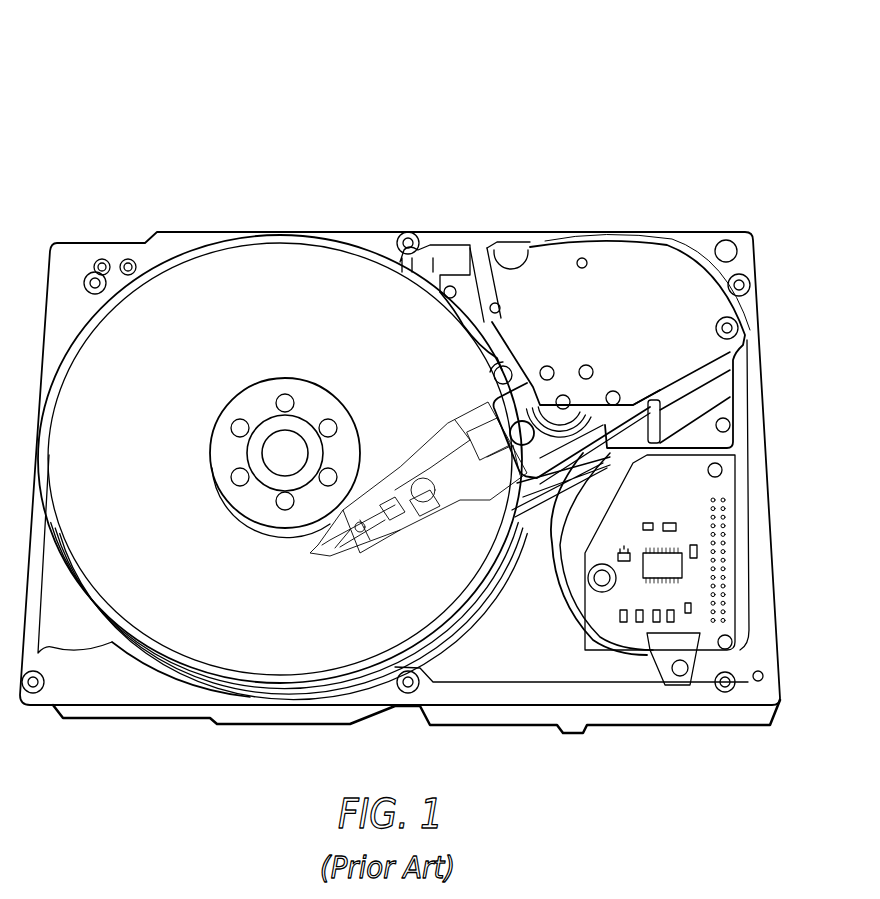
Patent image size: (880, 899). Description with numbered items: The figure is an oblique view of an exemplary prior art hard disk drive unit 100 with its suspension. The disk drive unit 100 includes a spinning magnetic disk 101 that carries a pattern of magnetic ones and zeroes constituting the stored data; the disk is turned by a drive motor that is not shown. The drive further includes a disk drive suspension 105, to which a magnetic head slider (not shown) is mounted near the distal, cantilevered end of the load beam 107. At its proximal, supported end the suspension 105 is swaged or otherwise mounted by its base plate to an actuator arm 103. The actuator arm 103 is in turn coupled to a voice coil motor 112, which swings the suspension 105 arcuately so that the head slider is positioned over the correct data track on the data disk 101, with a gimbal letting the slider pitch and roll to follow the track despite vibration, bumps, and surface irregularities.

The disk drive unit 100 is at (293, 196).
The magnetic disk 101 is at (235, 288).
The actuator arm 103 is at (535, 462).
The disk drive suspension 105 is at (349, 563).
The load beam 107 is at (397, 483).
The voice coil motor 112 is at (598, 327).